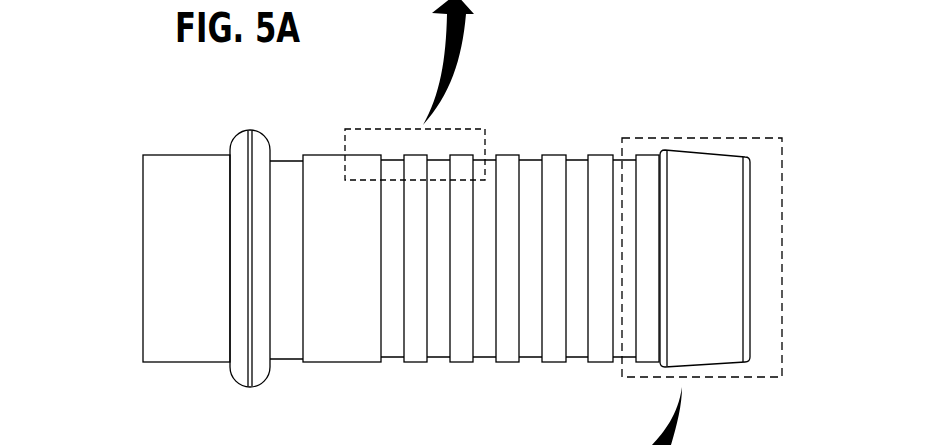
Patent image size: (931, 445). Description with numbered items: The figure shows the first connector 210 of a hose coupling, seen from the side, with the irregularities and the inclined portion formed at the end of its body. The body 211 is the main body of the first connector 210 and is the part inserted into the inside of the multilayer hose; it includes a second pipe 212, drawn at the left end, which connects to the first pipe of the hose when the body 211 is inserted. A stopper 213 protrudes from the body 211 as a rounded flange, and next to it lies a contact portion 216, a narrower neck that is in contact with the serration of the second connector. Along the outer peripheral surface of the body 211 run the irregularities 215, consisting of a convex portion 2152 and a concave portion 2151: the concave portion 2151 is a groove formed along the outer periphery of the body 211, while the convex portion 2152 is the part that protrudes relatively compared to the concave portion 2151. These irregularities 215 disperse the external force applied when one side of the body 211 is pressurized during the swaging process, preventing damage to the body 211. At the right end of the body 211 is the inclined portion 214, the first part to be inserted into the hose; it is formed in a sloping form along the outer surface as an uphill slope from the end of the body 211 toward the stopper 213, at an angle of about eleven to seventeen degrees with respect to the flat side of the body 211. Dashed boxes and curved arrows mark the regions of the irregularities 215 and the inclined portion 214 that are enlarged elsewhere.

The first connector 210 is at (613, 120).
The body 211 is at (345, 362).
The second pipe 212 is at (186, 282).
The stopper 213 is at (248, 387).
The inclined portion 214 is at (707, 150).
The irregularities 215 is at (656, 372).
The contact portion 216 is at (288, 160).
The concave portion 2151 is at (527, 162).
The convex portion 2152 is at (553, 156).